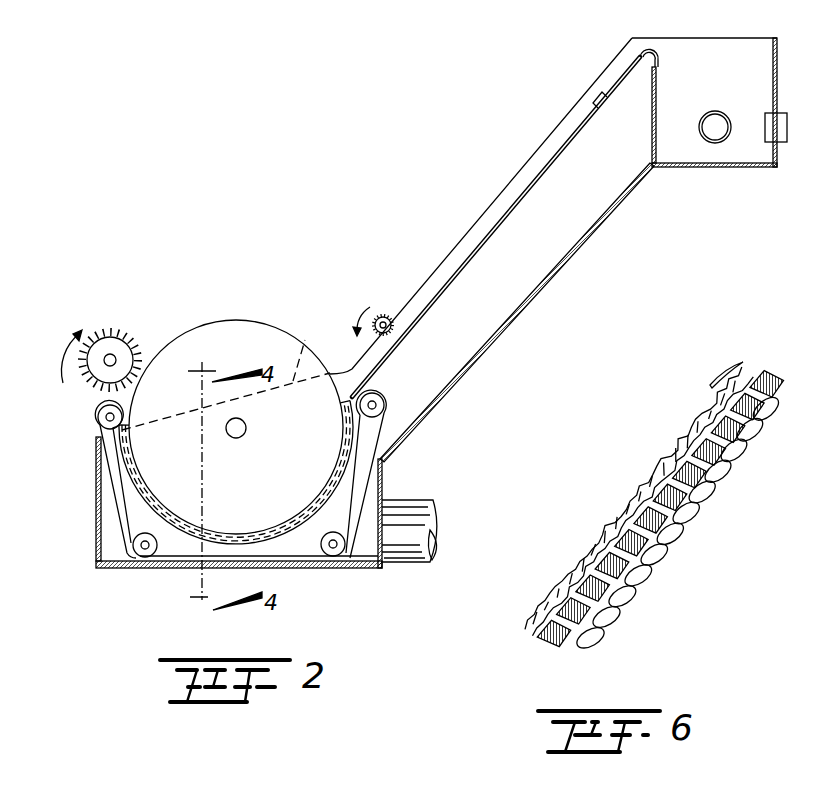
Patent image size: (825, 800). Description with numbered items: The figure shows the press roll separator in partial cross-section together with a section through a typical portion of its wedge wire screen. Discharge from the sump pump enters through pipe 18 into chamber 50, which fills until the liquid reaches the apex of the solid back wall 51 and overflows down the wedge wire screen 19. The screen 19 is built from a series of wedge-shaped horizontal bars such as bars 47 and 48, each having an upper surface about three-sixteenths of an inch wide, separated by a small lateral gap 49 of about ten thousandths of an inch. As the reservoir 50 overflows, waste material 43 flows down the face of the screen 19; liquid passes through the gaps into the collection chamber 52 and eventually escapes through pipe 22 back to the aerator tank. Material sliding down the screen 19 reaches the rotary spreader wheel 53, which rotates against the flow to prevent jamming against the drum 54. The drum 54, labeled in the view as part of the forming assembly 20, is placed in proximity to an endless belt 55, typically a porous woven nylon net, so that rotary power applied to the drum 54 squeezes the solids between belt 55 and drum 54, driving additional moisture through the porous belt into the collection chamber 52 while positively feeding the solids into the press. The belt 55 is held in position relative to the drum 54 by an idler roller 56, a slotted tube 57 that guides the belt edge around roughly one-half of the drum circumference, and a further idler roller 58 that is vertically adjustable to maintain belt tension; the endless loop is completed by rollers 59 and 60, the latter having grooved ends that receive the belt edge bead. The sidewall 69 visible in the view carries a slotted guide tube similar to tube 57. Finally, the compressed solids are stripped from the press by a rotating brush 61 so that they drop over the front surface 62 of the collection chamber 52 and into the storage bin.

In FIG. 2, the pipe 18 is at (777, 113).
In FIG. 2, the wedge wire screen 19 is at (527, 190).
In FIG. 6, the wedge wire screen 19 is at (635, 508).
In FIG. 2, the forming assembly 20 is at (236, 400).
In FIG. 2, the pipe 22 is at (434, 501).
In FIG. 6, the waste material 43 is at (622, 478).
In FIG. 6, the wedge-shaped horizontal bar 47 is at (748, 422).
In FIG. 6, the wedge-shaped horizontal bar 48 is at (762, 379).
In FIG. 6, the lateral gap 49 is at (728, 372).
In FIG. 2, the chamber 50 is at (690, 38).
In FIG. 2, the solid back wall 51 is at (656, 97).
In FIG. 2, the collection chamber 52 is at (381, 491).
In FIG. 2, the rotary spreader wheel 53 is at (379, 316).
In FIG. 2, the drum 54 is at (258, 321).
In FIG. 2, the endless belt 55 is at (384, 430).
In FIG. 2, the idler roller 56 is at (380, 395).
In FIG. 2, the slotted tube 57 is at (305, 508).
In FIG. 2, the idler roller 58 is at (98, 414).
In FIG. 2, the roller 59 is at (150, 553).
In FIG. 2, the roller 60 is at (336, 552).
In FIG. 2, the rotating brush 61 is at (116, 344).
In FIG. 2, the front surface 62 is at (96, 517).
In FIG. 2, the sidewall 69 is at (228, 378).